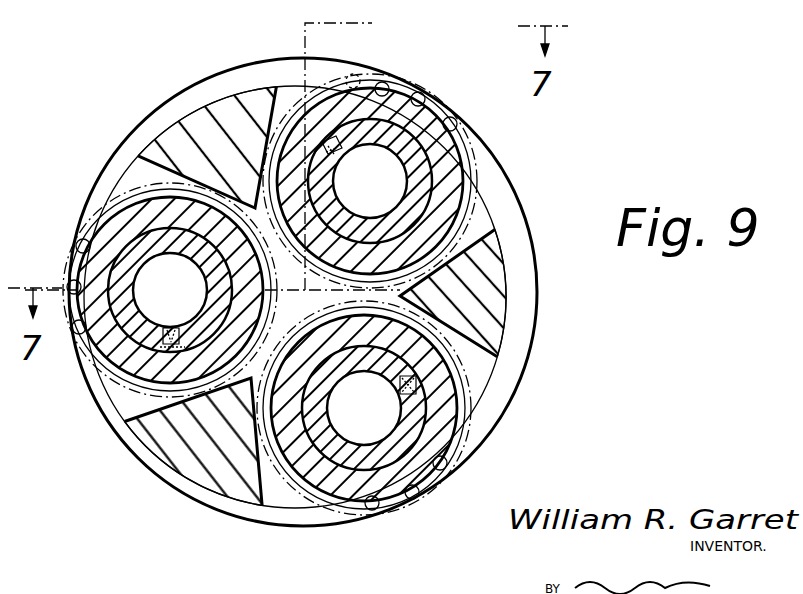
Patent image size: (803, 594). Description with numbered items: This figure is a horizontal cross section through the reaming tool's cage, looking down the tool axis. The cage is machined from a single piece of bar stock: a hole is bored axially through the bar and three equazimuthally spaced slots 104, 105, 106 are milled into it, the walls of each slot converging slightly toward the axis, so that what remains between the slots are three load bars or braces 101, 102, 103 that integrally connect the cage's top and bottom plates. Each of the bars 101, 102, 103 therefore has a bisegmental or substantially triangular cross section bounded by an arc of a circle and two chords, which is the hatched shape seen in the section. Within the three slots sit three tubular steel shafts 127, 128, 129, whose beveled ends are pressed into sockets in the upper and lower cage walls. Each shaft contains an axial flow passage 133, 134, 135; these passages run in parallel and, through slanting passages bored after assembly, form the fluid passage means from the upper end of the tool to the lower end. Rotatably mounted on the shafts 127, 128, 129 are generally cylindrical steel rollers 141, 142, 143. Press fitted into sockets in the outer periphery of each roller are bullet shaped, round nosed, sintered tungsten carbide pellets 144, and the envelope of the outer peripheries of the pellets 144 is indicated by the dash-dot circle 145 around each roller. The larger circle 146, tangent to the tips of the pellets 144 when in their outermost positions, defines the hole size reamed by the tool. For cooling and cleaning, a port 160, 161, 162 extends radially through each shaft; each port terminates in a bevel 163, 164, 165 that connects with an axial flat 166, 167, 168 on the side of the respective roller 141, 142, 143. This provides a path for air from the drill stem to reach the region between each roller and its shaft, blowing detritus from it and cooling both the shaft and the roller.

The load bar 101 is at (488, 250).
The load bar 102 is at (177, 442).
The load bar 103 is at (178, 122).
The slot 104 is at (522, 350).
The slot 105 is at (137, 400).
The slot 106 is at (287, 100).
The tubular steel shaft 127 is at (140, 248).
The tubular steel shaft 128 is at (422, 173).
The tubular steel shaft 129 is at (404, 443).
The axial flow passage 133 is at (194, 268).
The axial flow passage 134 is at (345, 200).
The axial flow passage 135 is at (390, 432).
The roller 141 is at (150, 213).
The roller 142 is at (450, 188).
The roller 143 is at (438, 433).
The sintered tungsten carbide pellets 144 is at (428, 97).
The envelope of pellet peripheries 145 is at (352, 78).
The hole size circle 146 is at (205, 75).
The radial port 160 is at (170, 333).
The radial port 161 is at (338, 176).
The radial port 162 is at (400, 384).
The bevel 163 is at (172, 328).
The bevel 164 is at (333, 150).
The bevel 165 is at (400, 404).
The axial flat 166 is at (140, 385).
The axial flat 167 is at (328, 140).
The axial flat 168 is at (418, 384).